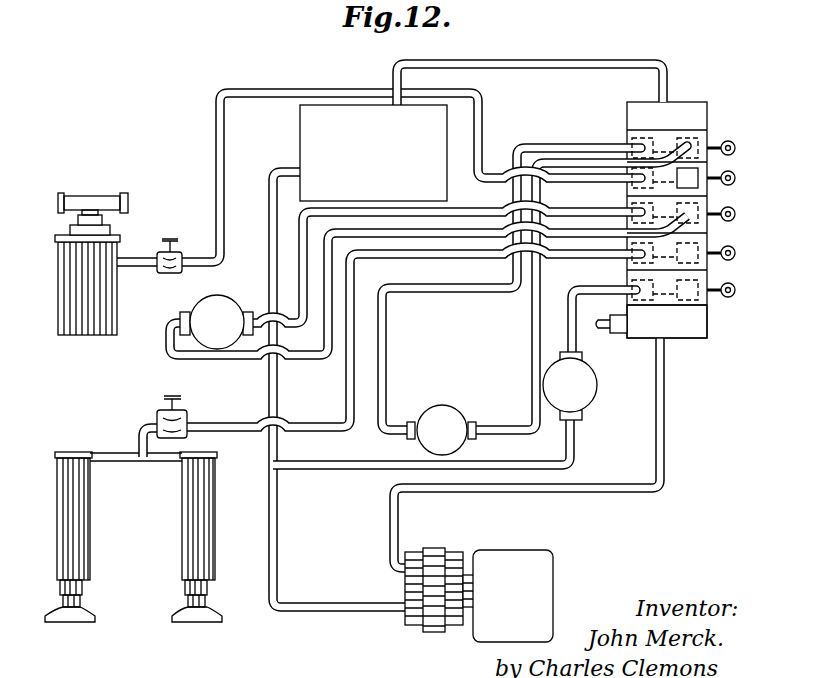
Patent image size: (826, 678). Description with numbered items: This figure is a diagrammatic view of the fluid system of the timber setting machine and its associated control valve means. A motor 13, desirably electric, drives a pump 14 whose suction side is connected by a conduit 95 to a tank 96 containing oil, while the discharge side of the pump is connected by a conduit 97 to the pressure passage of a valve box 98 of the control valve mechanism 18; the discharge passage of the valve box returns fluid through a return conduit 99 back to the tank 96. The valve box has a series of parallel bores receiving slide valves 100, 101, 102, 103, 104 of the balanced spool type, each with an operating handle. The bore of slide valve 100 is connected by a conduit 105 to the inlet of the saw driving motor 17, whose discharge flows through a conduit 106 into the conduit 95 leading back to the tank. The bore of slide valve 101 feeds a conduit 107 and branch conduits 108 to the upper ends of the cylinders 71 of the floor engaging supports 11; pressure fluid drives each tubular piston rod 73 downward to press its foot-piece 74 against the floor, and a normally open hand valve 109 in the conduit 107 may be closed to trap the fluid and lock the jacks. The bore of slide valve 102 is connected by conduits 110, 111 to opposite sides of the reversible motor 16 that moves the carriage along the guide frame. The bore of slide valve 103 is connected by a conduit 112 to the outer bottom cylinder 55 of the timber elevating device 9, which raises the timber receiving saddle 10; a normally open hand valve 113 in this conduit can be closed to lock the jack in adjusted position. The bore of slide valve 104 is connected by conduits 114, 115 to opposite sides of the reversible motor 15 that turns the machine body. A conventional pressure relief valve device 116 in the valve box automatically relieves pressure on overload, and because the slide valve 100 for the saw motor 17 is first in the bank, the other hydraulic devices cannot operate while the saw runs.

The timber elevating device 9 is at (74, 290).
The timber receiving saddle 10 is at (63, 193).
The floor engaging supports 11 is at (138, 545).
The motor 13 is at (532, 556).
The pump 14 is at (440, 551).
The reversible motor 15 is at (446, 408).
The reversible motor 16 is at (222, 300).
The motor 17 is at (590, 397).
The control valve mechanism 18 is at (698, 100).
The vertical cylinder 55 is at (97, 322).
The vertical fluid cylinder 71 is at (60, 509).
The tubular piston rod 73 is at (183, 590).
The foot-piece 74 is at (177, 618).
The conduit 95 is at (280, 541).
The tank 96 is at (300, 115).
The conduit 97 is at (614, 486).
The valve box 98 is at (697, 330).
The return conduit 99 is at (558, 60).
The slide valve 100 is at (712, 311).
The slide valve 101 is at (715, 247).
The slide valve 102 is at (713, 208).
The slide valve 103 is at (717, 172).
The slide valve 104 is at (713, 128).
The conduit 105 is at (592, 288).
The conduit 106 is at (577, 451).
The conduit 107 is at (447, 251).
The branch conduits 108 is at (168, 459).
The hand valve 109 is at (188, 418).
The conduit 110 is at (588, 209).
The conduit 111 is at (613, 231).
The conduit 112 is at (487, 131).
The hand valve 113 is at (171, 238).
The conduit 114 is at (465, 290).
The conduit 115 is at (531, 338).
The pressure relief valve device 116 is at (613, 333).